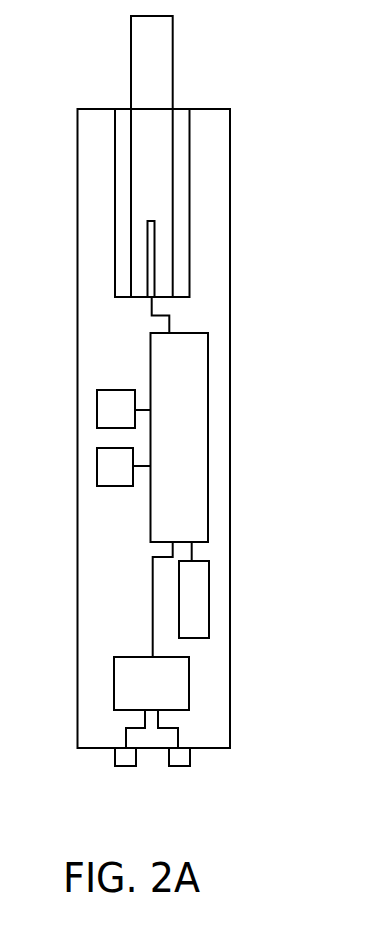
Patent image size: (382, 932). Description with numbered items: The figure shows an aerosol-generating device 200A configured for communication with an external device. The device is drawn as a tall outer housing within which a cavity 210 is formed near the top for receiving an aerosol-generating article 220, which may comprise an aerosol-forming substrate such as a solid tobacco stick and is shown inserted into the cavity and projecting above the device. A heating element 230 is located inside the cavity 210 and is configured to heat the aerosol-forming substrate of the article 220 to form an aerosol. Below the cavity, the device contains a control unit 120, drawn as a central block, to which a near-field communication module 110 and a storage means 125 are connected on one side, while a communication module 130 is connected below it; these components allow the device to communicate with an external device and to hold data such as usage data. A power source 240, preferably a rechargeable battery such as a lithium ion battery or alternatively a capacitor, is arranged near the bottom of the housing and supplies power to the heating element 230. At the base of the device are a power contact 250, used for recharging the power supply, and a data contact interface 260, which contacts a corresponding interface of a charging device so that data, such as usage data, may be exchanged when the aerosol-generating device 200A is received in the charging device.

The aerosol-generating device 200A is at (230, 150).
The aerosol-generating article 220 is at (173, 56).
The cavity 210 is at (190, 226).
The heating element 230 is at (155, 280).
The control unit 120 is at (197, 425).
The near-field communication module 110 is at (97, 410).
The storage means 125 is at (97, 468).
The communication module 130 is at (209, 598).
The power source 240 is at (168, 690).
The power contact 250 is at (117, 766).
The data contact interface 260 is at (189, 766).